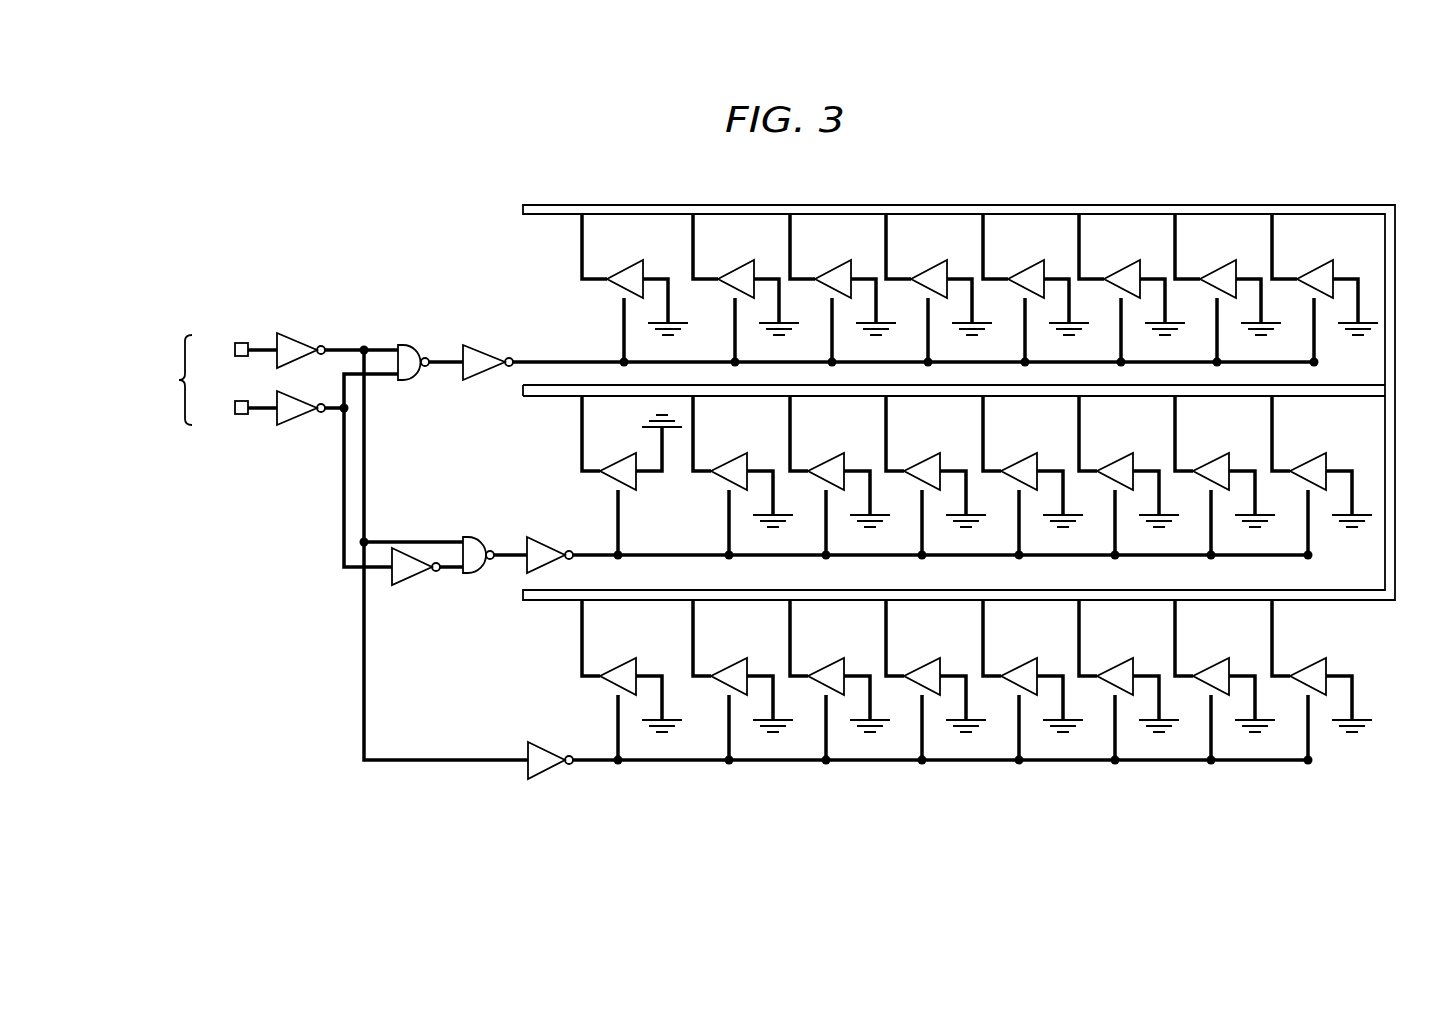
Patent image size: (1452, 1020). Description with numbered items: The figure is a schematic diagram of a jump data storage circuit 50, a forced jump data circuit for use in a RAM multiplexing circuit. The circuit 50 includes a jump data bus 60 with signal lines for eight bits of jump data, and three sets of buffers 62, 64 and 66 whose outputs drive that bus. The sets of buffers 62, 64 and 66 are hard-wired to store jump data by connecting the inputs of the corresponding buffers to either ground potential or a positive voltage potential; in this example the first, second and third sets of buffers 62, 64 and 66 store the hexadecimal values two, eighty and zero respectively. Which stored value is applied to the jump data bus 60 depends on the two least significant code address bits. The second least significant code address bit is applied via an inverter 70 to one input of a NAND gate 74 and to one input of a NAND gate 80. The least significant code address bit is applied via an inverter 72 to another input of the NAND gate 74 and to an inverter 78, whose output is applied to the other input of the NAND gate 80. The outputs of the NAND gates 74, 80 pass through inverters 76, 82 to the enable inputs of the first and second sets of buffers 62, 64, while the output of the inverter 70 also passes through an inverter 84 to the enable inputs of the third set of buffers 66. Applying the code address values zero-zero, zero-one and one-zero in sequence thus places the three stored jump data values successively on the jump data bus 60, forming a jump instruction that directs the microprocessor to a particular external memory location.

The jump data storage circuit 50 is at (322, 168).
The jump data bus 60 is at (548, 204).
The first set of buffers 62 is at (1404, 203).
The second set of buffers 64 is at (1404, 400).
The third set of buffers 66 is at (1404, 597).
The inverter 70 is at (300, 342).
The inverter 72 is at (300, 416).
The NAND gate 74 is at (405, 382).
The inverter 76 is at (478, 374).
The inverter 78 is at (410, 578).
The NAND gate 80 is at (467, 575).
The inverter 82 is at (553, 549).
The inverter 84 is at (552, 768).